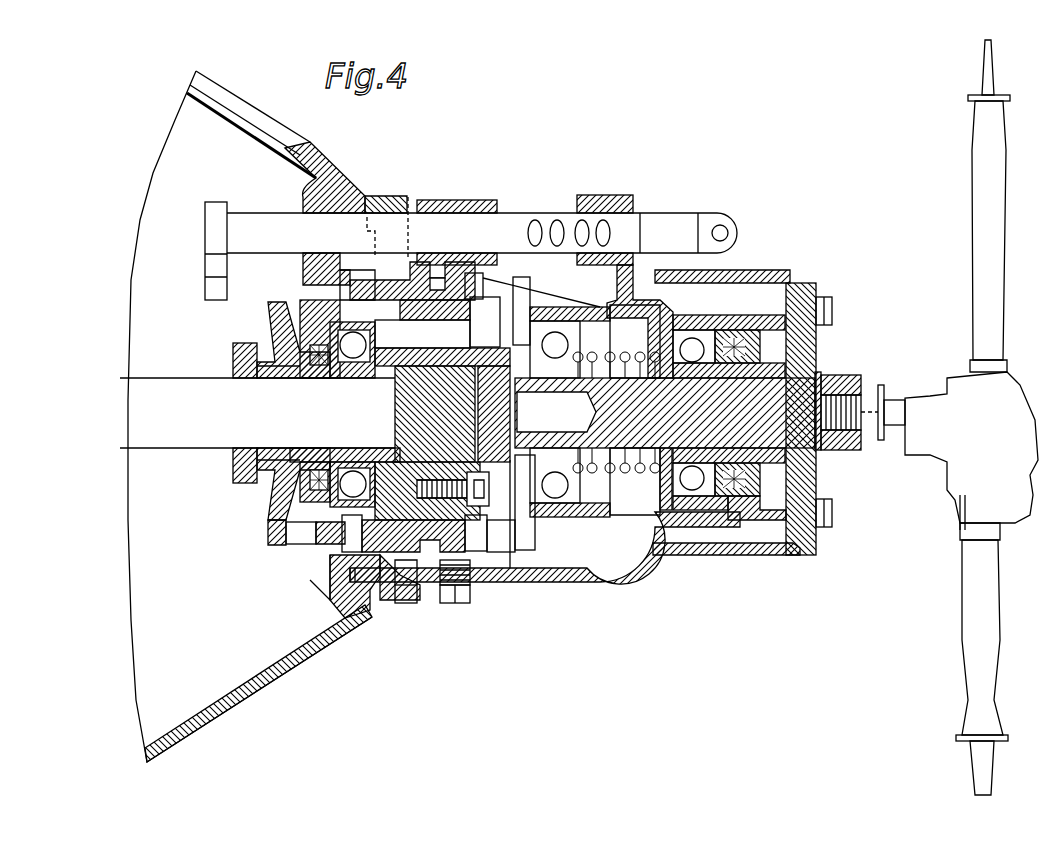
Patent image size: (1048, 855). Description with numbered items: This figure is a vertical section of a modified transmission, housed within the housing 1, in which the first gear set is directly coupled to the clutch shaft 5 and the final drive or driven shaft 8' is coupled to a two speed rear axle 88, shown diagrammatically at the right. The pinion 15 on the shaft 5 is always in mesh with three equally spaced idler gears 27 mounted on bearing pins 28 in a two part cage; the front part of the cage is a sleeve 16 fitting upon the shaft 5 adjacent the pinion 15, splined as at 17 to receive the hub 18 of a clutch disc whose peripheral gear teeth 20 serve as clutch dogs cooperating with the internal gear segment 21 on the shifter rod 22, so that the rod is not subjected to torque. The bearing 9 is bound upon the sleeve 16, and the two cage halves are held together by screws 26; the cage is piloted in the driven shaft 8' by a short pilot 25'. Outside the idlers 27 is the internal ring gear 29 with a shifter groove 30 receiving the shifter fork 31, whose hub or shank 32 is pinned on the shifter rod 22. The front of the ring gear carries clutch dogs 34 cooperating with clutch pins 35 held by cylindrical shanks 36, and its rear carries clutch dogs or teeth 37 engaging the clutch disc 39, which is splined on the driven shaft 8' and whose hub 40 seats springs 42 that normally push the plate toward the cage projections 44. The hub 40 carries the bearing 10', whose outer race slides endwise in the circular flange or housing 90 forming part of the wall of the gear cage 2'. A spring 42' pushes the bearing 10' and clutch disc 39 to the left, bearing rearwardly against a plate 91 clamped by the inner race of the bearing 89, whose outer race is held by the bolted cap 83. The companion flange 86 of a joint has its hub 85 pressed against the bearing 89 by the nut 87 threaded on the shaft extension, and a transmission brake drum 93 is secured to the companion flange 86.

The bell housing 1 is at (330, 180).
The frame or gear cage 2' is at (466, 535).
The clutch shaft 5 is at (160, 392).
The driven shaft 8' is at (816, 393).
The bearing 9 is at (353, 345).
The bearing 10' is at (570, 482).
The pinion 15 is at (395, 418).
The sleeve 16 is at (275, 380).
The spline 17 is at (302, 380).
The hub 18 is at (302, 462).
The gear teeth 20 is at (247, 372).
The internal gear segment 21 is at (205, 258).
The shifter rod 22 is at (283, 215).
The short pilot 25' is at (665, 413).
The screws 26 is at (490, 506).
The idler gears 27 is at (405, 339).
The bearing pins 28 is at (480, 330).
The internal ring gear 29 is at (410, 603).
The shifter groove 30 is at (448, 603).
The shifter fork 31 is at (440, 266).
The hub or shank 32 is at (452, 200).
The clutch dogs 34 is at (318, 568).
The clutch pins 35 is at (350, 272).
The cylindrical shanks 36 is at (290, 540).
The clutch dogs or teeth 37 is at (475, 274).
The clutch disc 39 is at (452, 509).
The hub 40 is at (586, 362).
The springs 42 is at (616, 481).
The spring 42' is at (616, 341).
The clutch dogs or projections 44 is at (522, 320).
The cap 83 is at (740, 335).
The hub 85 is at (778, 482).
The companion flange 86 is at (818, 490).
The nut 87 is at (840, 378).
The two speed rear axle 88 is at (945, 478).
The bearing 89 is at (692, 345).
The circular flange or housing 90 is at (618, 556).
The plate 91 is at (662, 472).
The transmission brake drum 93 is at (758, 556).